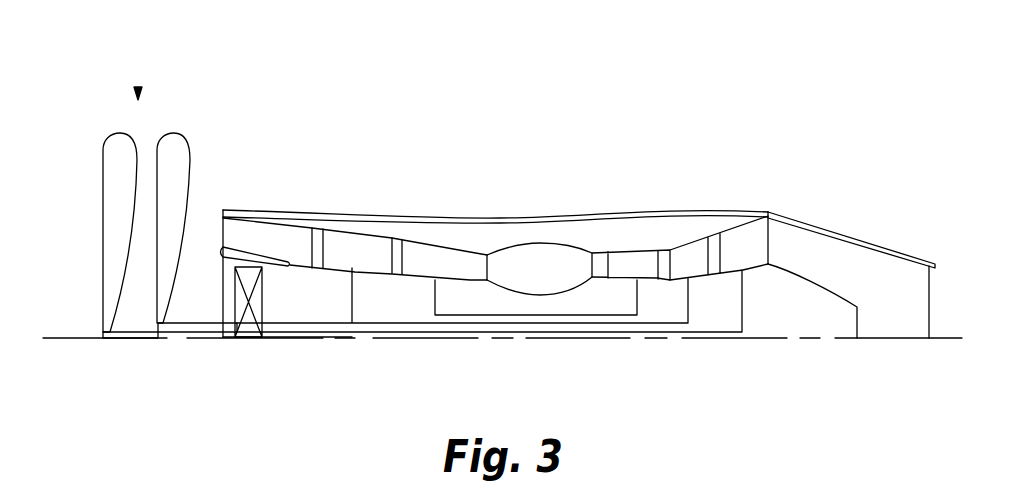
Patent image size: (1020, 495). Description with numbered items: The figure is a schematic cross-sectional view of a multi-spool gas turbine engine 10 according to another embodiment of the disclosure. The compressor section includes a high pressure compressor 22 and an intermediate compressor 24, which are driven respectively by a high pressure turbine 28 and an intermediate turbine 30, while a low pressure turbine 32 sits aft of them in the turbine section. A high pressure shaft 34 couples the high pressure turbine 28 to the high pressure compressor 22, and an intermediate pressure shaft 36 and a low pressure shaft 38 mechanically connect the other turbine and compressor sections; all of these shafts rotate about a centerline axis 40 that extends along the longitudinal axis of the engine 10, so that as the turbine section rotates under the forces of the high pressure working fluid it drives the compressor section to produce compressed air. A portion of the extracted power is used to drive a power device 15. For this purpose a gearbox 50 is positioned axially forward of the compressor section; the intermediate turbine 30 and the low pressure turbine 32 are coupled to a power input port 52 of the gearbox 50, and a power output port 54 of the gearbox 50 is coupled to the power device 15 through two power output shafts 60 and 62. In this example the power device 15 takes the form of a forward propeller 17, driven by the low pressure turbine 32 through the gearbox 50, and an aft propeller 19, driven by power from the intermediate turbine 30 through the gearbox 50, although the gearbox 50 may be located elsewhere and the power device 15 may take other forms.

The gas turbine engine 10 is at (557, 163).
The power device 15 is at (137, 92).
The forward propeller 17 is at (113, 183).
The aft propeller 19 is at (173, 190).
The high pressure compressor 22 is at (440, 247).
The intermediate compressor 24 is at (352, 248).
The high pressure turbine 28 is at (628, 255).
The intermediate turbine 30 is at (690, 262).
The low pressure turbine 32 is at (745, 240).
The high pressure shaft 34 is at (530, 315).
The intermediate pressure shaft 36 is at (410, 323).
The low pressure shaft 38 is at (333, 338).
The centerline axis 40 is at (940, 338).
The gearbox 50 is at (250, 327).
The power input port 52 is at (278, 337).
The power output port 54 is at (223, 338).
The power output shaft 60 is at (122, 340).
The power output shaft 62 is at (182, 340).